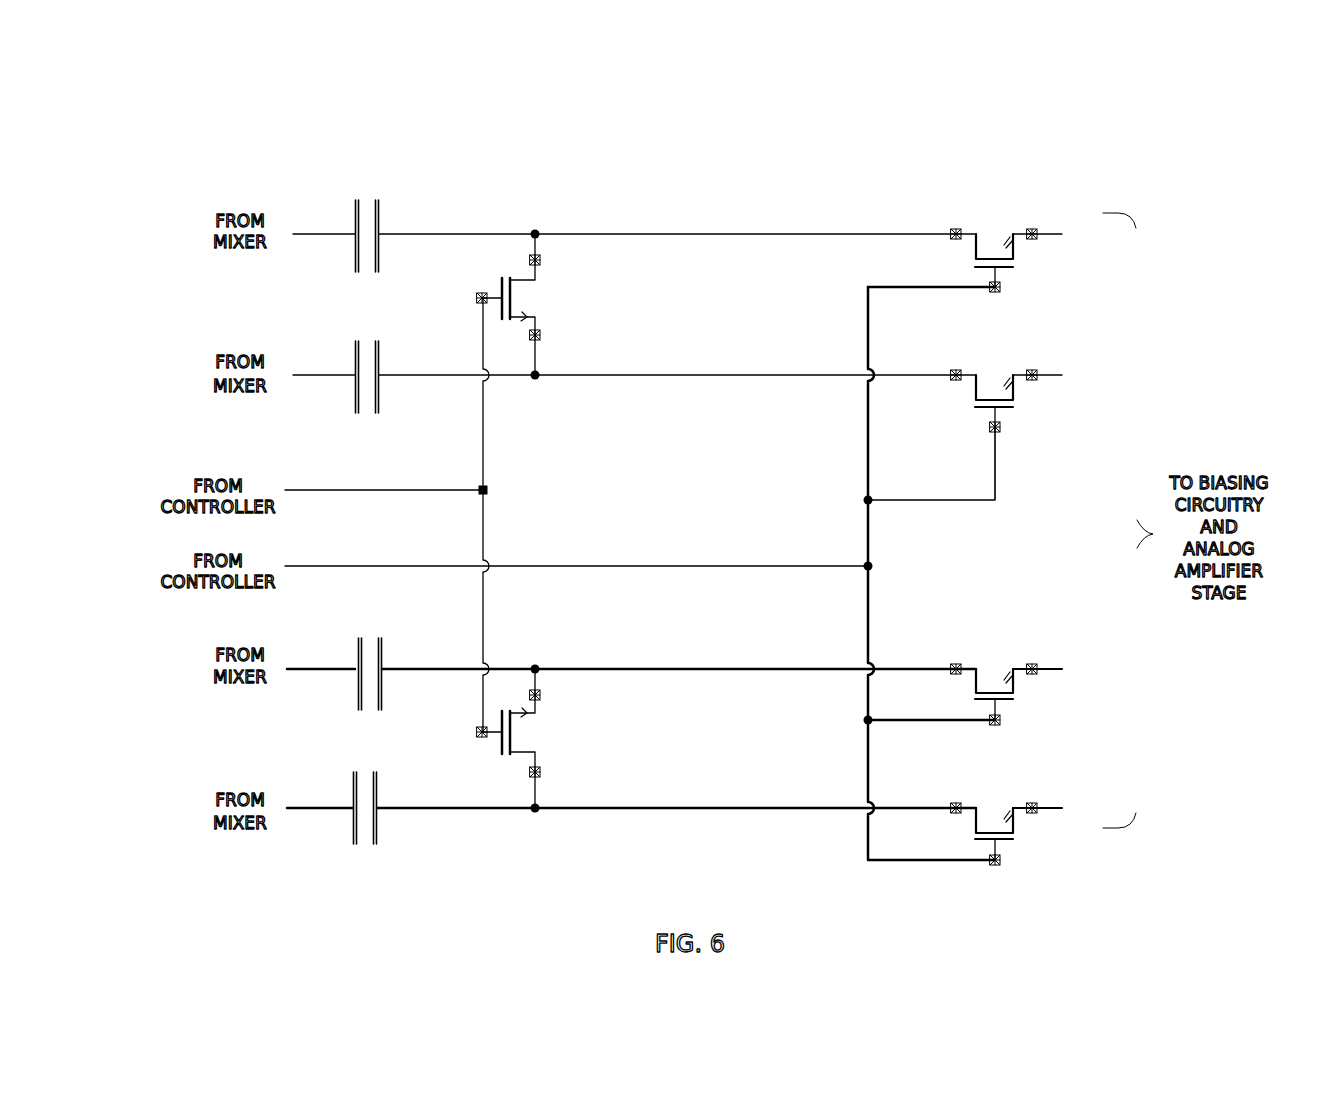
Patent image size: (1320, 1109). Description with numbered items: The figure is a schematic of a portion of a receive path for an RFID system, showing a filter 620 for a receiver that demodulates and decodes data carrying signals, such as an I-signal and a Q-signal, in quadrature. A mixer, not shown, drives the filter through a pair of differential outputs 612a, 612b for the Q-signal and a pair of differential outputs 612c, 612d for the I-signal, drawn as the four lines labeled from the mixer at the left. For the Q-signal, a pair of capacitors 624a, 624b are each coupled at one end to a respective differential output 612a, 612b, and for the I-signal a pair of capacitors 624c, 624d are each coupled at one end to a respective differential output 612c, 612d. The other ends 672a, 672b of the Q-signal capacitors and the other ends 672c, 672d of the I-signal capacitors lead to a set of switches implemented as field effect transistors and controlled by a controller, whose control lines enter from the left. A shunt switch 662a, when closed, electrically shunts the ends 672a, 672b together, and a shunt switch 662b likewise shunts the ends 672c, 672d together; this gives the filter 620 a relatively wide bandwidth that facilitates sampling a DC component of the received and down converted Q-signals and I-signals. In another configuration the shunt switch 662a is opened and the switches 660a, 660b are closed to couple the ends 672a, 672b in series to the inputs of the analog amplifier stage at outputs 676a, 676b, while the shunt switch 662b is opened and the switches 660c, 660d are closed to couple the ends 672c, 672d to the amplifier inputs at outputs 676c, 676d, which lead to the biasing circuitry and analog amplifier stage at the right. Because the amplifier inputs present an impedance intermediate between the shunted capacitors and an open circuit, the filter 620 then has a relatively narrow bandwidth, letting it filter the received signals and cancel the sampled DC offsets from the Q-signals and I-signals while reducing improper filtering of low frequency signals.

The filter 620 is at (1033, 132).
The differential output 612a is at (316, 236).
The differential output 612b is at (308, 377).
The differential output 612c is at (316, 671).
The differential output 612d is at (310, 810).
The capacitor 624a is at (354, 220).
The capacitor 624b is at (354, 356).
The capacitor 624c is at (357, 655).
The capacitor 624d is at (352, 798).
The other end of capacitor 672a is at (446, 234).
The other end of capacitor 672b is at (400, 375).
The other end of capacitor 672c is at (422, 669).
The other end of capacitor 672d is at (396, 808).
The shunt switch 662a is at (528, 270).
The shunt switch 662b is at (512, 754).
The switch 660a is at (1016, 250).
The switch 660b is at (1018, 392).
The switch 660c is at (1020, 686).
The switch 660d is at (1018, 825).
The output 676a is at (1047, 234).
The output 676b is at (1047, 375).
The output 676c is at (1047, 669).
The output 676d is at (1047, 808).